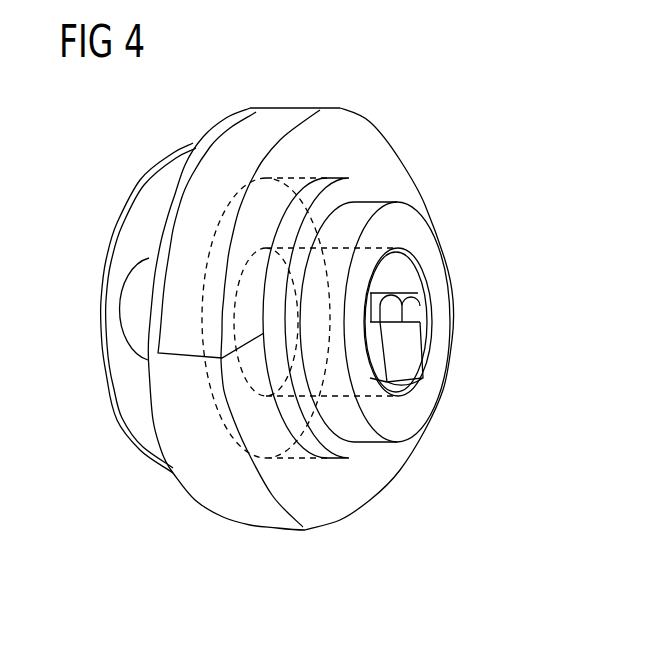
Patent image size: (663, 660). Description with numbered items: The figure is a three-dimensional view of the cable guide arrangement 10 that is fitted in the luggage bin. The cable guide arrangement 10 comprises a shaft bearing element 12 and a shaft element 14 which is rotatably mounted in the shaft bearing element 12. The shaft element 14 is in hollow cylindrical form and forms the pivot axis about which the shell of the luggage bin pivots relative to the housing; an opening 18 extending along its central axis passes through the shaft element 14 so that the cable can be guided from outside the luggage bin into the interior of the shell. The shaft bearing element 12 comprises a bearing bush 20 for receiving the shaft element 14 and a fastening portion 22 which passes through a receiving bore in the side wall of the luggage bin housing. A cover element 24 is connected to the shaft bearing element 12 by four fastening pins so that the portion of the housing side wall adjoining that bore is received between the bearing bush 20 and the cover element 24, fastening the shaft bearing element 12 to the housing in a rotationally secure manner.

The cable guide arrangement 10 is at (426, 103).
The shaft bearing element 12 is at (214, 129).
The shaft element 14 is at (428, 234).
The opening 18 is at (414, 280).
The bearing bush 20 is at (279, 114).
The fastening portion 22 is at (128, 304).
The cover element 24 is at (141, 200).